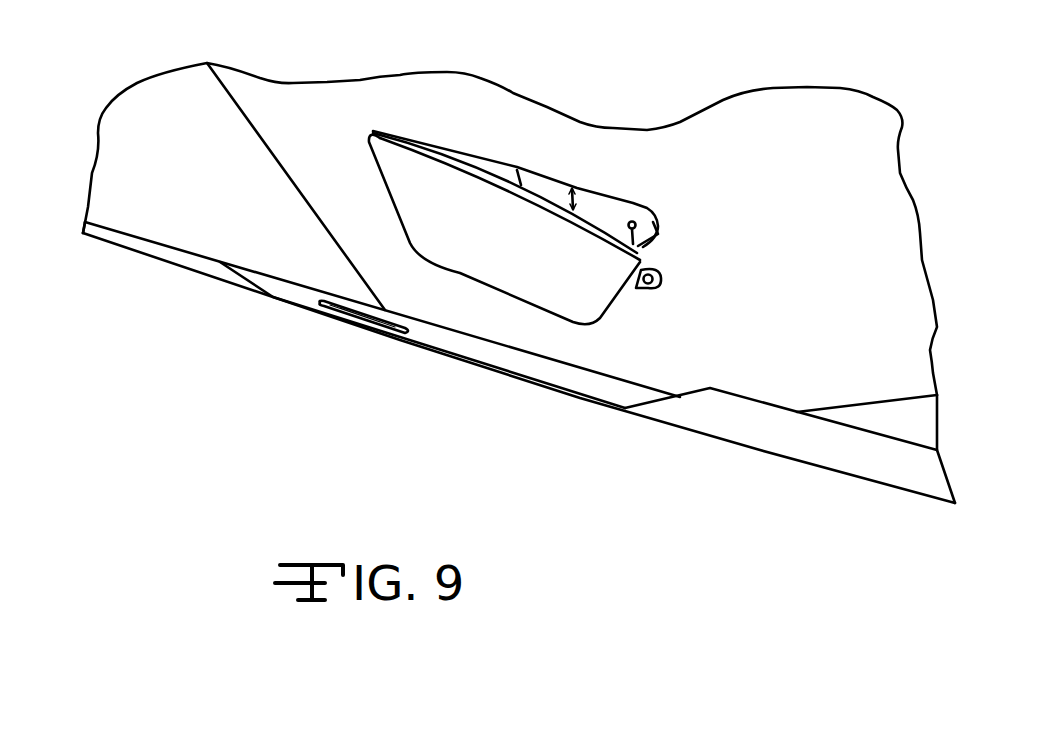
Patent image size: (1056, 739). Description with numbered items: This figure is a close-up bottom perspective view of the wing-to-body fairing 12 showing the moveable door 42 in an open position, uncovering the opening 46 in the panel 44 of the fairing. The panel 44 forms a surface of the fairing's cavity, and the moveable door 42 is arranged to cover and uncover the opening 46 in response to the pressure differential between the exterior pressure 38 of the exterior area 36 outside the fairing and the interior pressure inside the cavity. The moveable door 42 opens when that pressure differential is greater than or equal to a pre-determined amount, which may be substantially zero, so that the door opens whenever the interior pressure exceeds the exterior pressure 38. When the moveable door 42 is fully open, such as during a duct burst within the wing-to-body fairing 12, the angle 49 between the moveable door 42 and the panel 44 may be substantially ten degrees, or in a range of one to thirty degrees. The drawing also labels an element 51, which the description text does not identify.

The wing-to-body fairing 12 is at (893, 238).
The exterior area 36 is at (783, 480).
The exterior pressure 38 is at (718, 473).
The moveable door 42 is at (550, 270).
The panel 44 is at (920, 357).
The opening 46 is at (645, 242).
The angle 49 is at (576, 200).
The hinge arm 51 is at (653, 230).